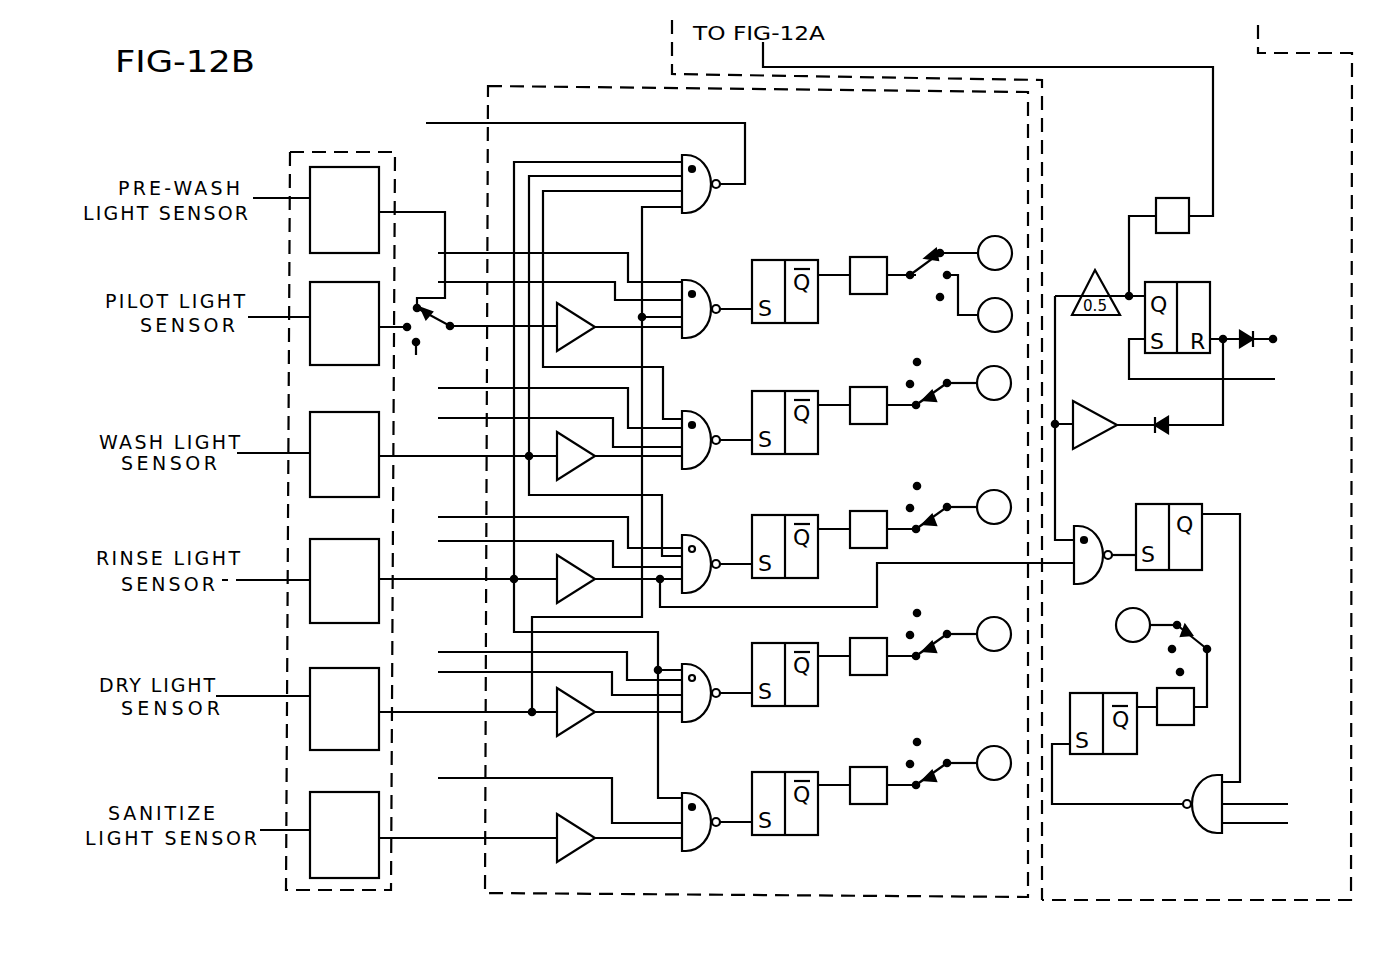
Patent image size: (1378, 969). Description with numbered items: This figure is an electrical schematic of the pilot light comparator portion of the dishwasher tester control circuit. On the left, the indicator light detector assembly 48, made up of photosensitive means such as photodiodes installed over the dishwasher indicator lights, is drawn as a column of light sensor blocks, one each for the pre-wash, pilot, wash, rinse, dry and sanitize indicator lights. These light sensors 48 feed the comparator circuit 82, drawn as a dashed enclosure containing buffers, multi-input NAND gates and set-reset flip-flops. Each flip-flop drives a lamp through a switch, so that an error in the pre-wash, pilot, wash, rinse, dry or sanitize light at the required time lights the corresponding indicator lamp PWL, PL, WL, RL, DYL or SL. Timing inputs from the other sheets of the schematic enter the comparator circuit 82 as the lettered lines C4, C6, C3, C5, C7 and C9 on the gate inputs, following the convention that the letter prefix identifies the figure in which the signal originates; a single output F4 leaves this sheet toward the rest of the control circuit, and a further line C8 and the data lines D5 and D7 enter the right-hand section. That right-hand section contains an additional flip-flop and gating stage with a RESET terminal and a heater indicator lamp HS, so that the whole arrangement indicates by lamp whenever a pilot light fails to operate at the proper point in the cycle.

The indicator light detector assembly 48 is at (332, 162).
The comparator circuit 82 is at (622, 88).
The F4 output signal line F4 is at (560, 148).
The C4 clock input line C4 is at (543, 395).
The C6 clock input line C6 is at (543, 286).
The C3 clock input line C3 is at (543, 403).
The C5 clock input line C5 is at (543, 427).
The C7 clock input line C7 is at (543, 549).
The C9 clock input line C9 is at (543, 795).
The C8 clock input line C8 is at (1227, 365).
The D5 data input line D5 is at (866, 728).
The D7 data input line D7 is at (866, 747).
The pre-wash lamp PWL is at (995, 237).
The pilot lamp PL is at (978, 322).
The wash lamp WL is at (988, 374).
The rinse lamp RL is at (992, 490).
The dry lamp DYL is at (992, 617).
The sanitize lamp SL is at (990, 746).
The heater status lamp HS is at (1116, 625).
The reset terminal RESET is at (1277, 340).